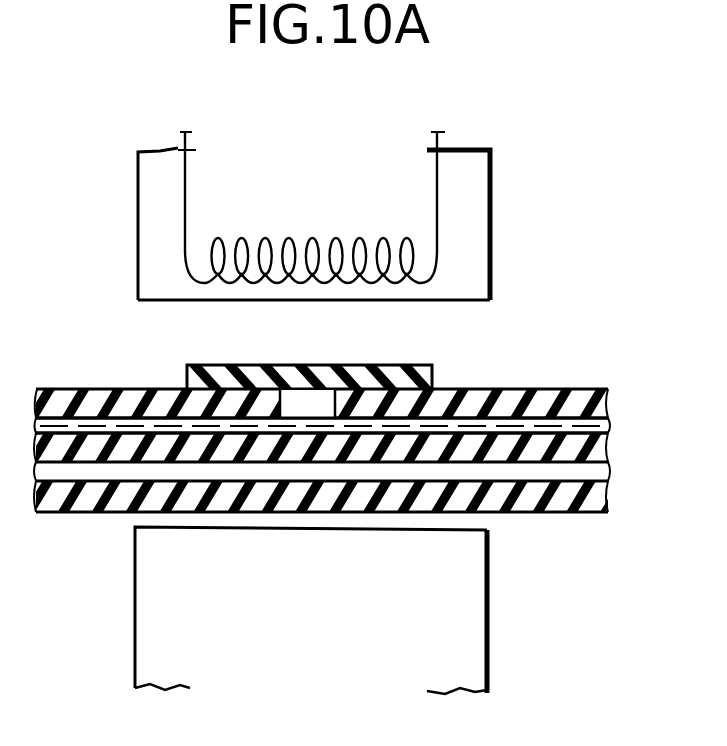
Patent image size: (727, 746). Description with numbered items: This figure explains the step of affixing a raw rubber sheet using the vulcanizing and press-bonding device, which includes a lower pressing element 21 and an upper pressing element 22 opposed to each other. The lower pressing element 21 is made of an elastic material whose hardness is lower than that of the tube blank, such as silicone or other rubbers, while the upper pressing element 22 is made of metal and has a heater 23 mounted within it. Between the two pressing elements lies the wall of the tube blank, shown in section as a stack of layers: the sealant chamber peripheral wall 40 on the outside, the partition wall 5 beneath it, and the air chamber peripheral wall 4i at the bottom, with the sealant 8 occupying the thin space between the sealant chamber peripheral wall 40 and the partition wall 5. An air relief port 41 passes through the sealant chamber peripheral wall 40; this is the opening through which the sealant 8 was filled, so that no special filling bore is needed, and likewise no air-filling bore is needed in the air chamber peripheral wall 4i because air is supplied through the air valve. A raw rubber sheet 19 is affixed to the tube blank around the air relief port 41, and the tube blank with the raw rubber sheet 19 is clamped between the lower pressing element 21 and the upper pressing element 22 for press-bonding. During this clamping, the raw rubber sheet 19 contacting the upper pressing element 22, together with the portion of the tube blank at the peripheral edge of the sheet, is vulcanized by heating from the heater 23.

The upper pressing element 22 is at (478, 217).
The heater 23 is at (262, 238).
The sealant chamber peripheral wall 40 is at (547, 405).
The air relief port 41 is at (296, 397).
The raw rubber sheet 19 is at (375, 383).
The sealant 8 is at (83, 427).
The partition wall 5 is at (602, 457).
The air chamber peripheral wall 4i is at (552, 512).
The lower pressing element 21 is at (468, 645).